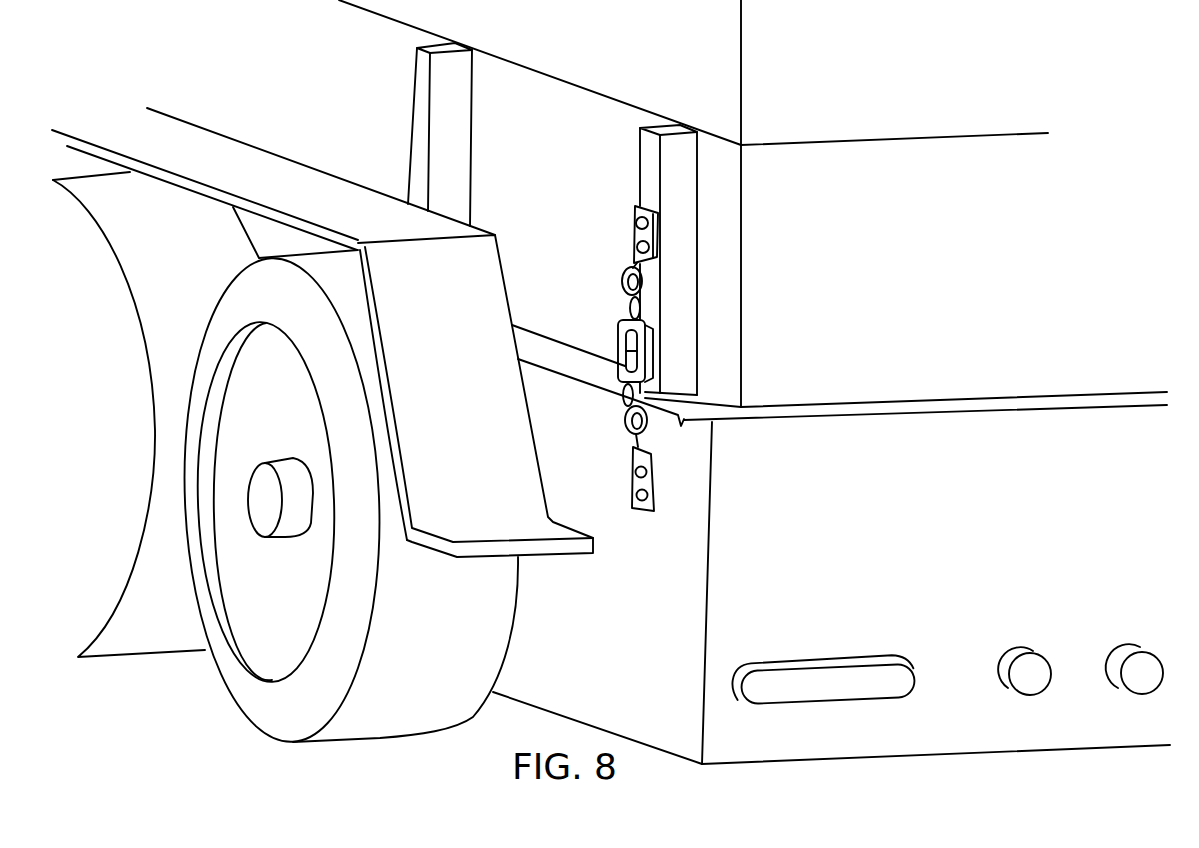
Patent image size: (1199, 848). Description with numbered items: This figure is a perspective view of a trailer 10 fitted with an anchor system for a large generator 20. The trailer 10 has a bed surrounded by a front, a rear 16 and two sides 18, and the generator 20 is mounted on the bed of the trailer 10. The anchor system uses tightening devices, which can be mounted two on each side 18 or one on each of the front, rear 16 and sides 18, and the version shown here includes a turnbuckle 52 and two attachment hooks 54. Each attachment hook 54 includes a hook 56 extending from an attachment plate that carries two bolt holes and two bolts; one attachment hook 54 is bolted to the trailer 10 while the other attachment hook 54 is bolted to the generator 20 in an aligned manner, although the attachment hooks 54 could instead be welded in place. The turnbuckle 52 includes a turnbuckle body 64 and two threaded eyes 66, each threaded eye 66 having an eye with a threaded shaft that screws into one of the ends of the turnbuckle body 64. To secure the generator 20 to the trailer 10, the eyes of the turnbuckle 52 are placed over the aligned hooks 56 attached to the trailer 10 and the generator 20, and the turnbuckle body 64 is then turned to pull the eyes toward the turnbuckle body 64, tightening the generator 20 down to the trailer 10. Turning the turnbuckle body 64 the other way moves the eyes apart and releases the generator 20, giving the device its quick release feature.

The trailer 10 is at (512, 708).
The rear 16 is at (831, 578).
The side 18 is at (662, 676).
The generator 20 is at (875, 103).
The turnbuckle 52 is at (572, 326).
The attachment hook 54 is at (658, 237).
The hook 56 is at (633, 268).
The turnbuckle body 64 is at (655, 349).
The threaded eye 66 is at (640, 306).